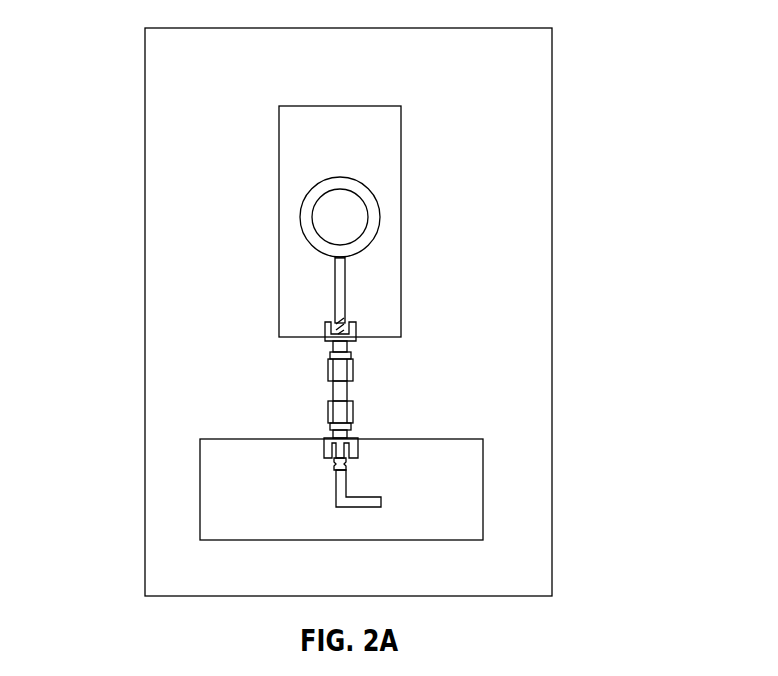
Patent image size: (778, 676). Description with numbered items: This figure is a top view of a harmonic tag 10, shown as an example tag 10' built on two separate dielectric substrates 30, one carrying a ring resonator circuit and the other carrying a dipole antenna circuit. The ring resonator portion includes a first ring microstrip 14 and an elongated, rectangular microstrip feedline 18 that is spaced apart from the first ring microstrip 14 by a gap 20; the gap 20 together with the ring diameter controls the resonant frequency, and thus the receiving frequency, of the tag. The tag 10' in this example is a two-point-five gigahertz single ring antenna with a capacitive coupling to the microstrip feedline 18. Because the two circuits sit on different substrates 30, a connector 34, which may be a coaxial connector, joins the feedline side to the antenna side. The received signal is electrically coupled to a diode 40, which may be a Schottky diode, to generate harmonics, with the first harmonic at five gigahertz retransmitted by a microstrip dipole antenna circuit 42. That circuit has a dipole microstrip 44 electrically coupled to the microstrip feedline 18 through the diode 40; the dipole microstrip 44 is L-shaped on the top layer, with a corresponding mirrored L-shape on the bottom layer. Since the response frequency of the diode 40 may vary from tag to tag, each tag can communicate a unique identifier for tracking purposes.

The harmonic tag 10 is at (332, 298).
The tag 10' is at (637, 359).
The first ring microstrip 14 is at (372, 190).
The microstrip feedline 18 is at (347, 292).
The gap 20 is at (348, 258).
The dielectric substrate 30 is at (318, 137).
The connector 34 is at (328, 390).
The diode 40 is at (334, 467).
The microstrip dipole antenna circuit 42 is at (244, 557).
The dipole microstrip 44 is at (336, 500).